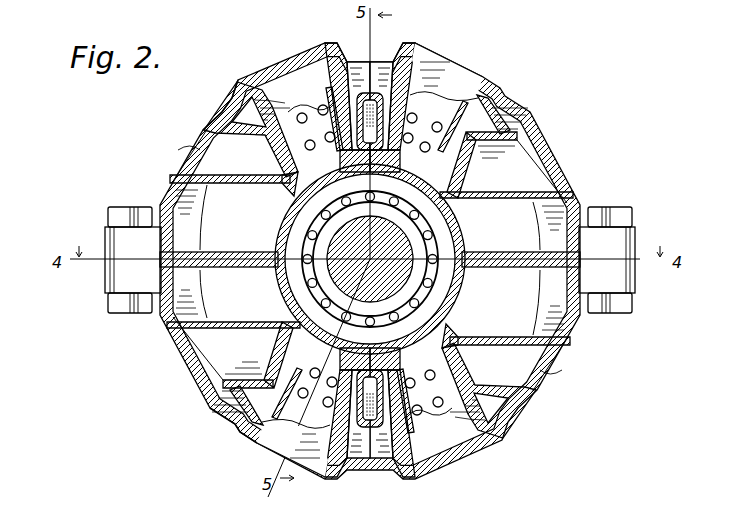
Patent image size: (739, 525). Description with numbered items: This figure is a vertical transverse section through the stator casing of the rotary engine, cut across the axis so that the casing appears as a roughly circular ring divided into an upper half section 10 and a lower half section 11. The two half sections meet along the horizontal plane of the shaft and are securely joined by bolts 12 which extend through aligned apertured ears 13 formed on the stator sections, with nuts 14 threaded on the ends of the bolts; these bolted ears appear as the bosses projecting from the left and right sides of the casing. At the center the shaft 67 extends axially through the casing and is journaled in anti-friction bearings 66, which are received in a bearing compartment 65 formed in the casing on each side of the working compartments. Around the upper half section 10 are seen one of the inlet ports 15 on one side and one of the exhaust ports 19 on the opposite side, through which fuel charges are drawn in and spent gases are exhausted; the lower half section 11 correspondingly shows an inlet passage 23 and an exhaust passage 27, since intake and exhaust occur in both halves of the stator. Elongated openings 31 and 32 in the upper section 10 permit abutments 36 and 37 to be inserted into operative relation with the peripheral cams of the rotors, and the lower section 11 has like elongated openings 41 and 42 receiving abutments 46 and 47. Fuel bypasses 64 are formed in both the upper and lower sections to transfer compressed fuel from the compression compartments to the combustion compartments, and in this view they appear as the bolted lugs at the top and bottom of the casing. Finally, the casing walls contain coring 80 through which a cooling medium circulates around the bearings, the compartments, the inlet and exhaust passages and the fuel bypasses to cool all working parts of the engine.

The upper half section of the stator casing 10 is at (220, 105).
The lower half section of the stator casing 11 is at (227, 434).
The bolts 12 is at (108, 213).
The apertured ears 13 is at (105, 237).
The nuts 14 is at (108, 312).
The inlet port 15 is at (198, 146).
The exhaust port 19 is at (534, 160).
The inlet passage 23 is at (540, 370).
The exhaust passage 27 is at (192, 362).
The elongated opening 31 is at (296, 62).
The elongated opening 32 is at (445, 66).
The abutment 36 is at (310, 104).
The abutment 37 is at (440, 118).
The elongated opening 41 is at (468, 446).
The elongated opening 42 is at (310, 462).
The abutment 46 is at (430, 414).
The abutment 47 is at (300, 416).
The fuel bypasses 64 is at (341, 48).
The bearing compartments 65 is at (438, 316).
The anti-friction bearings 66 is at (414, 237).
The shaft 67 is at (343, 243).
The coring 80 is at (370, 260).